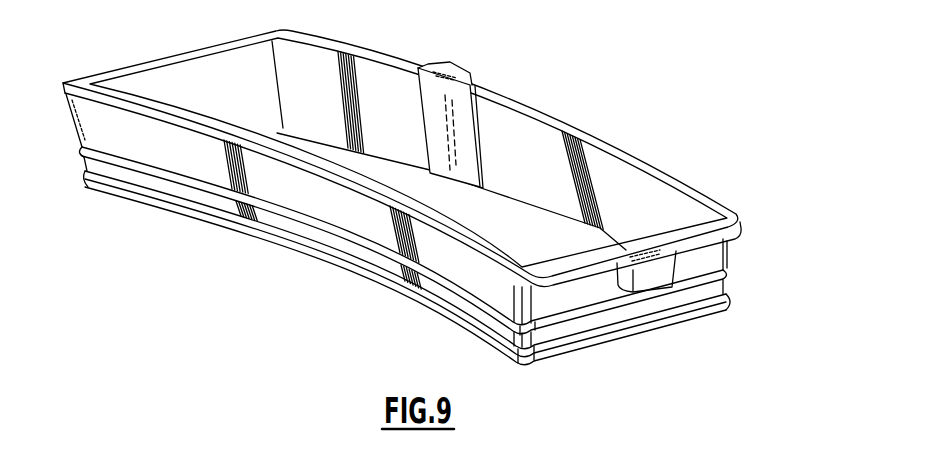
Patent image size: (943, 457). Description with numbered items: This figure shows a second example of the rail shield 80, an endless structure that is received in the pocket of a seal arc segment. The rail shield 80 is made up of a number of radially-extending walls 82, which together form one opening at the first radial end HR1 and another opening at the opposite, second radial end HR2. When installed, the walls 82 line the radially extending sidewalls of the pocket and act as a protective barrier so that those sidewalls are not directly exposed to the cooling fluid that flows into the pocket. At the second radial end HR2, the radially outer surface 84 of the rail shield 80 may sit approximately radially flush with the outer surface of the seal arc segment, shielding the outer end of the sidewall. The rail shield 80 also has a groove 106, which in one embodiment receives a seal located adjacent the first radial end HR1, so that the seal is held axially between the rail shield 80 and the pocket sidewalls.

The rail shield 80 is at (453, 195).
The radially-extending walls 82 is at (192, 80).
The radially outer surface 84 is at (680, 187).
The groove 106 is at (728, 291).
The first radial end HR1 is at (735, 328).
The second radial end HR2 is at (747, 213).